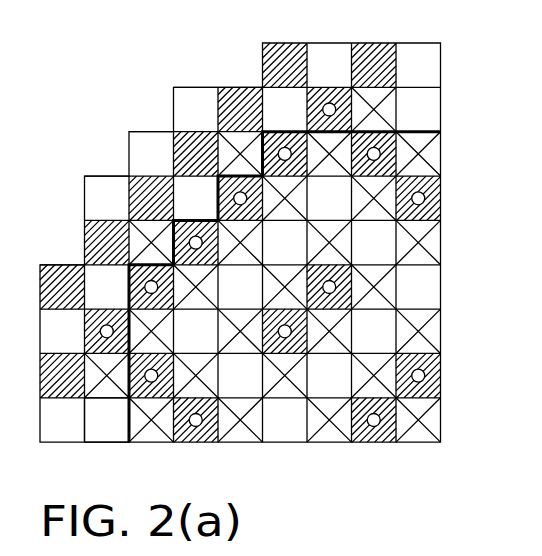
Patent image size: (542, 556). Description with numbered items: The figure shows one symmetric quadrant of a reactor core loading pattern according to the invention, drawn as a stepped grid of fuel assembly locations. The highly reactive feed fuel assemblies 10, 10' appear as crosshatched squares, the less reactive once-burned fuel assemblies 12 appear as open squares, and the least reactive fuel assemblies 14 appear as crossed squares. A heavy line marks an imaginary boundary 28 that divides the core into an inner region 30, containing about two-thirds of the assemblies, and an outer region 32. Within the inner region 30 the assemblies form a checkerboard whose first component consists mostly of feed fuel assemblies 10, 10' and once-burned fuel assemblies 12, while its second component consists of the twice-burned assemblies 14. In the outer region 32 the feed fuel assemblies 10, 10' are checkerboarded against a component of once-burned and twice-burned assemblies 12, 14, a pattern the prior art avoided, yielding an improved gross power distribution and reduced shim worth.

The feed fuel assembly 10 is at (218, 220).
The feed fuel assembly 10' is at (263, 242).
The once-burned fuel assembly 12 is at (327, 47).
The twice-burned fuel assembly 14 is at (133, 240).
The boundary 28 is at (425, 131).
The inner region 30 is at (186, 450).
The outer region 32 is at (88, 448).